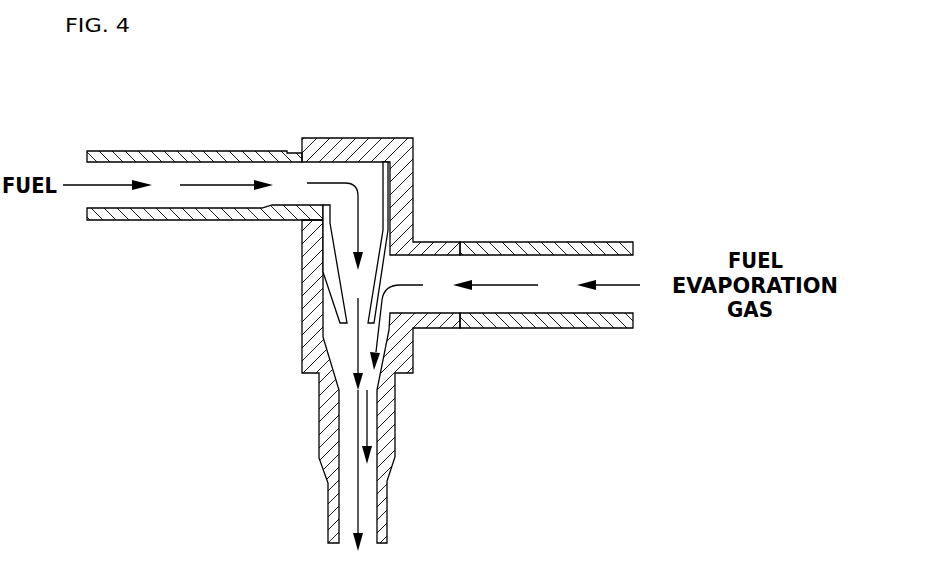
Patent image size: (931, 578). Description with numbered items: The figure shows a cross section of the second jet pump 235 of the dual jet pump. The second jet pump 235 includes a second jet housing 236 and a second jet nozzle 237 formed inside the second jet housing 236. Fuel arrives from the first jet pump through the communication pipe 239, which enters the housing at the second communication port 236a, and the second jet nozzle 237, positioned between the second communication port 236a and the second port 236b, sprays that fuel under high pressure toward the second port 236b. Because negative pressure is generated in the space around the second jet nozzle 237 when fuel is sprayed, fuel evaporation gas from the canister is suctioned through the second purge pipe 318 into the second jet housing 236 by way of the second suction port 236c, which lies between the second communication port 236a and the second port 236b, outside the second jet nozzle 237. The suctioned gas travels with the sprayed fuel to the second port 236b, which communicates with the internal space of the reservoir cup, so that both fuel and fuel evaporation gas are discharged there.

The communication pipe 239 is at (140, 151).
The second communication port 236a is at (295, 183).
The second jet pump 235 is at (422, 136).
The second suction port 236c is at (415, 267).
The second purge pipe 318 is at (592, 250).
The second jet housing 236 is at (307, 265).
The second jet nozzle 237 is at (337, 297).
The second port 236b is at (388, 402).